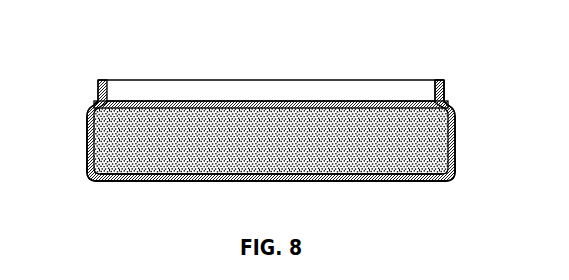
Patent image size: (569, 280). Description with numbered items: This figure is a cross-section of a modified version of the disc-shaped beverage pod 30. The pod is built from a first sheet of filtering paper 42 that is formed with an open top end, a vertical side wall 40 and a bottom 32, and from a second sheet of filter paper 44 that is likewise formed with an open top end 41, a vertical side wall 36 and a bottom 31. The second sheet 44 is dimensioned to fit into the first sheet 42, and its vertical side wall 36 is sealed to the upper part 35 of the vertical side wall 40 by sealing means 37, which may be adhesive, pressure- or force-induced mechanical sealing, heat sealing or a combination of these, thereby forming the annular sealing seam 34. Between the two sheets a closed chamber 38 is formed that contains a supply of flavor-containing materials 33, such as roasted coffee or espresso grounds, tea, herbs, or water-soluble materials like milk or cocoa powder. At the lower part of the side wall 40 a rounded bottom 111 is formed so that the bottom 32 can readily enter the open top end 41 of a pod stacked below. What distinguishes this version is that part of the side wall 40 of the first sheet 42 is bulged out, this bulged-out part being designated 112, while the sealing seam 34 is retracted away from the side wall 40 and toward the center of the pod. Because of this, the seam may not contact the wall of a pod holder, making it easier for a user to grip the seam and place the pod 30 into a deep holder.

The beverage pod 30 is at (70, 73).
The bottom 31 is at (153, 101).
The bottom 32 is at (147, 182).
The flavor-containing materials 33 is at (248, 160).
The sealing seam 34 is at (454, 95).
The upper part of the vertical side wall 35 is at (448, 88).
The vertical side wall 36 is at (435, 80).
The sealing means 37 is at (442, 80).
The closed chamber 38 is at (90, 175).
The vertical side wall 40 is at (87, 119).
The open top end 41 is at (207, 83).
The first sheet of filtering paper 42 is at (326, 182).
The second sheet of filter paper 44 is at (328, 100).
The rounded bottom 111 is at (452, 177).
The bulged-out part of the side wall 112 is at (460, 133).